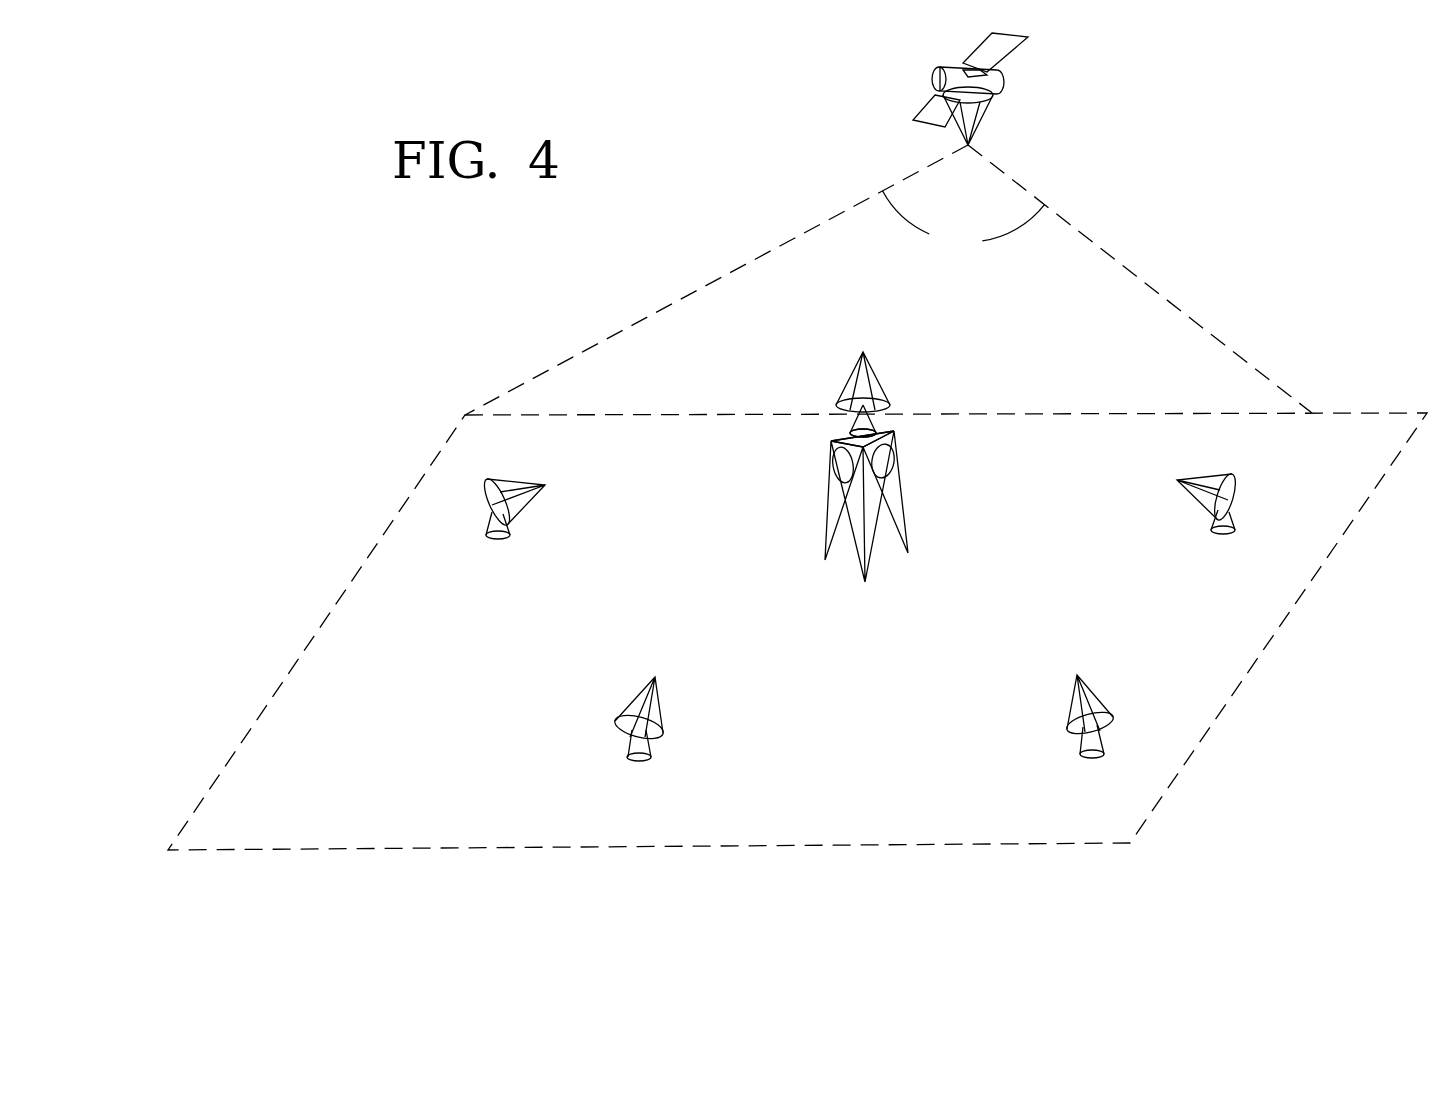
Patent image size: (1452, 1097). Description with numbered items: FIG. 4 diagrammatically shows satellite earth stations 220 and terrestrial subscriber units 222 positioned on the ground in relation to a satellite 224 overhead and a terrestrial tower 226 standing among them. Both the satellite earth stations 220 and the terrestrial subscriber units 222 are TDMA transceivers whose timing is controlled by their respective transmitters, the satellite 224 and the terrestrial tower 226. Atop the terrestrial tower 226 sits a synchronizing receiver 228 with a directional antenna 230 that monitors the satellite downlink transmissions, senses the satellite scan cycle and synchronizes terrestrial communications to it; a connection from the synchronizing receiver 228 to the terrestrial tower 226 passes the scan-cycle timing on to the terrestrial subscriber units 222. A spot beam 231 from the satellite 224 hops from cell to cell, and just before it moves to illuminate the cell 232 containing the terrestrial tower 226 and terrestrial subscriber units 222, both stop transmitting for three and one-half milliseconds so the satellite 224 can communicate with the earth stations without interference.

The satellite earth station 220 is at (670, 747).
The terrestrial subscriber unit 222 is at (533, 532).
The satellite 224 is at (1015, 80).
The terrestrial tower 226 is at (913, 472).
The synchronizing receiver 228 is at (827, 383).
The directional antenna 230 is at (865, 343).
The spot beam 231 is at (888, 280).
The cell 232 is at (533, 452).